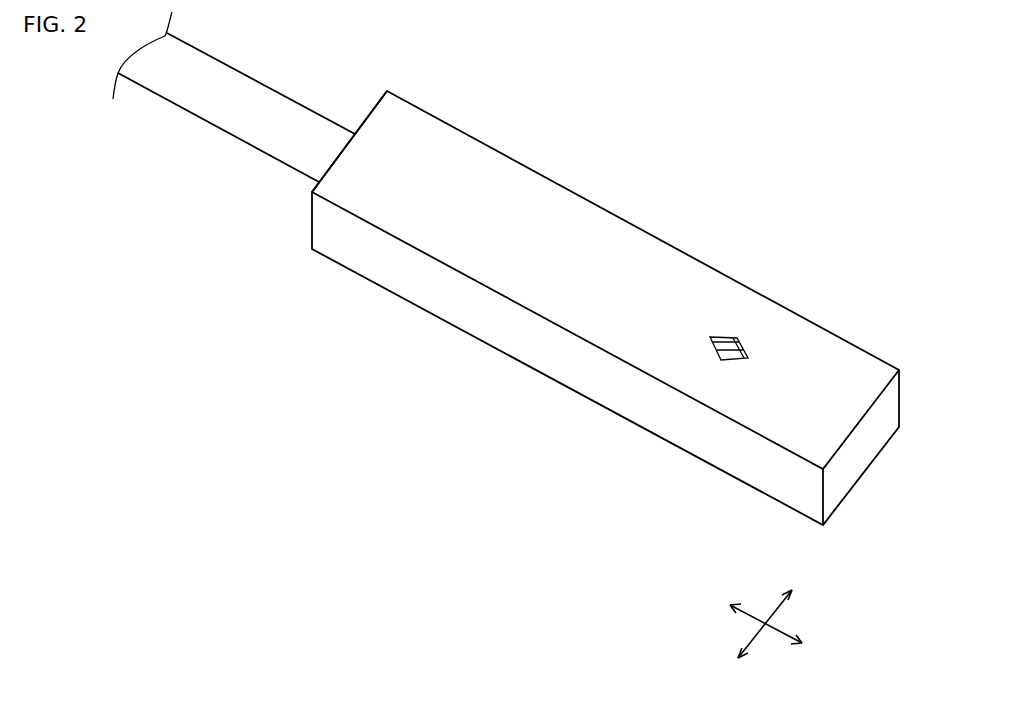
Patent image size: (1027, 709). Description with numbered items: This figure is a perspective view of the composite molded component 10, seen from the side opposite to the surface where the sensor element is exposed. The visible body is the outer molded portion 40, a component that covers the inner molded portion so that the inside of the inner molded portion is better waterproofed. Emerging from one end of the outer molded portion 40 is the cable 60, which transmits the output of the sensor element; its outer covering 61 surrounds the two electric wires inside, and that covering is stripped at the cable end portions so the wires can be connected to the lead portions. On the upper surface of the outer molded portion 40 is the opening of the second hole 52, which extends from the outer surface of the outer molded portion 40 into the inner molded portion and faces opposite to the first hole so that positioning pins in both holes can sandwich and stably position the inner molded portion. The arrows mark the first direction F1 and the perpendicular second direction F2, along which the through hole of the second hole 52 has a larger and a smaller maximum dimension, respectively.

The composite molded component 10 is at (506, 268).
The outer molded portion 40 is at (688, 262).
The second hole 52 is at (728, 335).
The cable 60 is at (234, 99).
The outer covering 61 is at (212, 115).
The first direction F1 is at (783, 627).
The second direction F2 is at (770, 616).